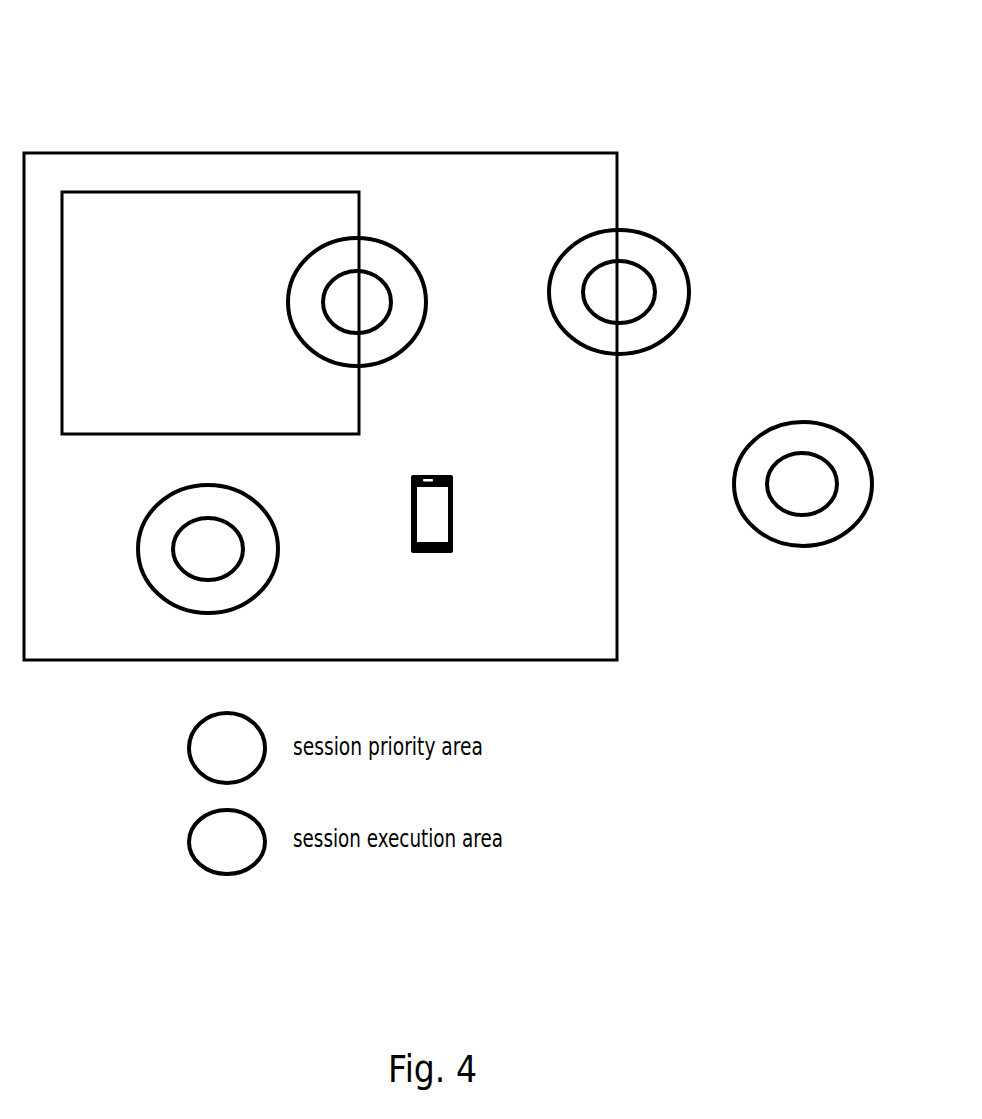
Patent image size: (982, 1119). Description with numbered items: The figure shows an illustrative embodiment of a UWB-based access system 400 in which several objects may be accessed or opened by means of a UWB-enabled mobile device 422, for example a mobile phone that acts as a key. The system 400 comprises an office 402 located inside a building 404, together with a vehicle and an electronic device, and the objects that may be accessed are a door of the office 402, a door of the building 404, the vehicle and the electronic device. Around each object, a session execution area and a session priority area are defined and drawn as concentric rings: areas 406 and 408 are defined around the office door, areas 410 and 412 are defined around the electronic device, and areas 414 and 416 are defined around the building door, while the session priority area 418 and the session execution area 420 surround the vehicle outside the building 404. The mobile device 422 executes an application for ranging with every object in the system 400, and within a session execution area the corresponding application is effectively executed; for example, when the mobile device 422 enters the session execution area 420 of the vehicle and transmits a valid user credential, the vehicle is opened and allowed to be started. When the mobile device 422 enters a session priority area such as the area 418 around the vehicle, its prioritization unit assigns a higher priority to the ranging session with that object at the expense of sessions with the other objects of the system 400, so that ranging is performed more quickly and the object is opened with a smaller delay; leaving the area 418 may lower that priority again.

The UWB-based access system 400 is at (229, 78).
The office 402 is at (278, 406).
The building 404 is at (500, 626).
The session execution area 406 is at (383, 358).
The session priority area 408 is at (366, 273).
The session execution area 410 is at (257, 596).
The session priority area 412 is at (238, 526).
The session execution area 414 is at (658, 340).
The session priority area 416 is at (645, 266).
The session priority area 418 is at (838, 536).
The session execution area 420 is at (812, 455).
The mobile device 422 is at (455, 512).